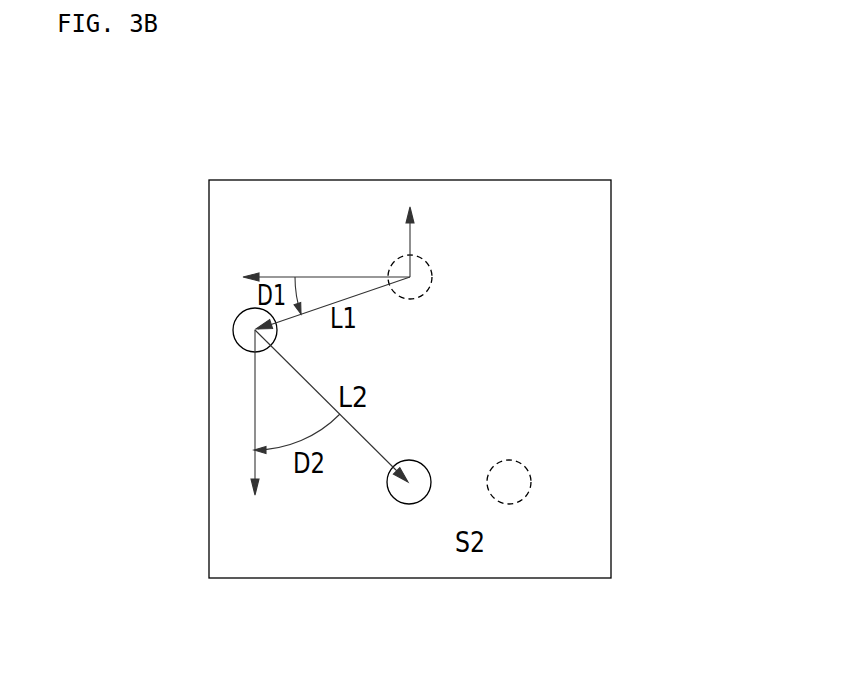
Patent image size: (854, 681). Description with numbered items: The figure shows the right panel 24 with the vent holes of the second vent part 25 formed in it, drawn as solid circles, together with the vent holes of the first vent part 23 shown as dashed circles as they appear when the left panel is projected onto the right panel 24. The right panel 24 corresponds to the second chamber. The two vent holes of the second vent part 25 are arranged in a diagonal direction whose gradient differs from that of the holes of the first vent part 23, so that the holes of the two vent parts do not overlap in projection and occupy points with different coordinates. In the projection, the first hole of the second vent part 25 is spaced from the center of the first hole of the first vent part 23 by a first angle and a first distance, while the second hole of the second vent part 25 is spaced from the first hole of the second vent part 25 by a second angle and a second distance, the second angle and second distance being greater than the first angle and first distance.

The first vent part 23 is at (425, 258).
The right panel 24 is at (564, 297).
The second vent part 25 is at (242, 348).